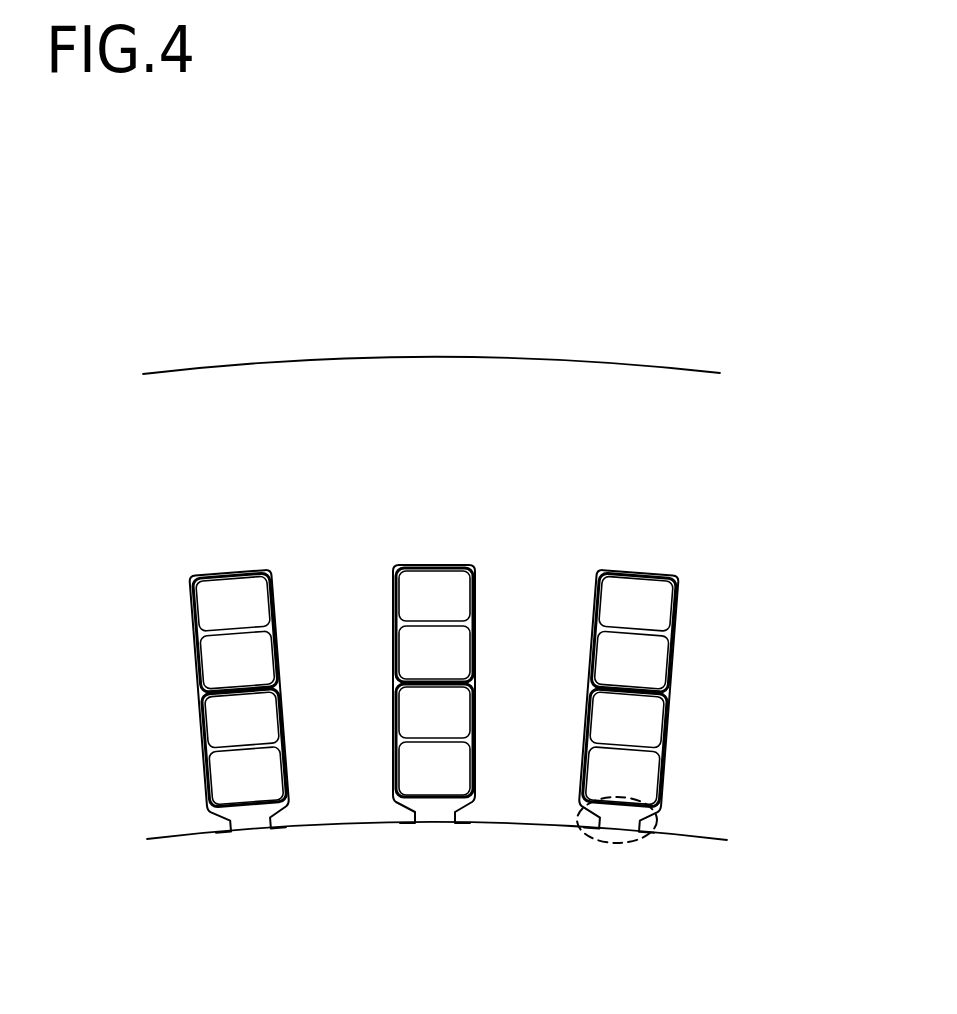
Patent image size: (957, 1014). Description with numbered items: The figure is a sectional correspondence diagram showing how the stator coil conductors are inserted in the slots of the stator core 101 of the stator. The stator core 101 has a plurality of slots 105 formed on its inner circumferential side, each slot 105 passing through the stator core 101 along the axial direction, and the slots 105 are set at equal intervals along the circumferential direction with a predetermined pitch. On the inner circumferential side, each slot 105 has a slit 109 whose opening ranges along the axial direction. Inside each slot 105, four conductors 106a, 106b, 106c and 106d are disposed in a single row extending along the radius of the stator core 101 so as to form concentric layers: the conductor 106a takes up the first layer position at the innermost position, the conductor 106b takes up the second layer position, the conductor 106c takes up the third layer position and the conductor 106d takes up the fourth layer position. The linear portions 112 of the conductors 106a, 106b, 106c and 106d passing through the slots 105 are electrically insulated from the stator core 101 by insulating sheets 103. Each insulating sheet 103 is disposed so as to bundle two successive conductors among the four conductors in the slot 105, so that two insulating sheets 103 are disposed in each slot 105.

The stator core 101 is at (441, 318).
The insulating sheet 103 is at (391, 665).
The slot 105 is at (437, 880).
The conductor 106a is at (714, 761).
The conductor 106b is at (716, 700).
The conductor 106c is at (718, 640).
The conductor 106d is at (721, 580).
The slit 109 is at (620, 878).
The linear portion 112 is at (468, 542).